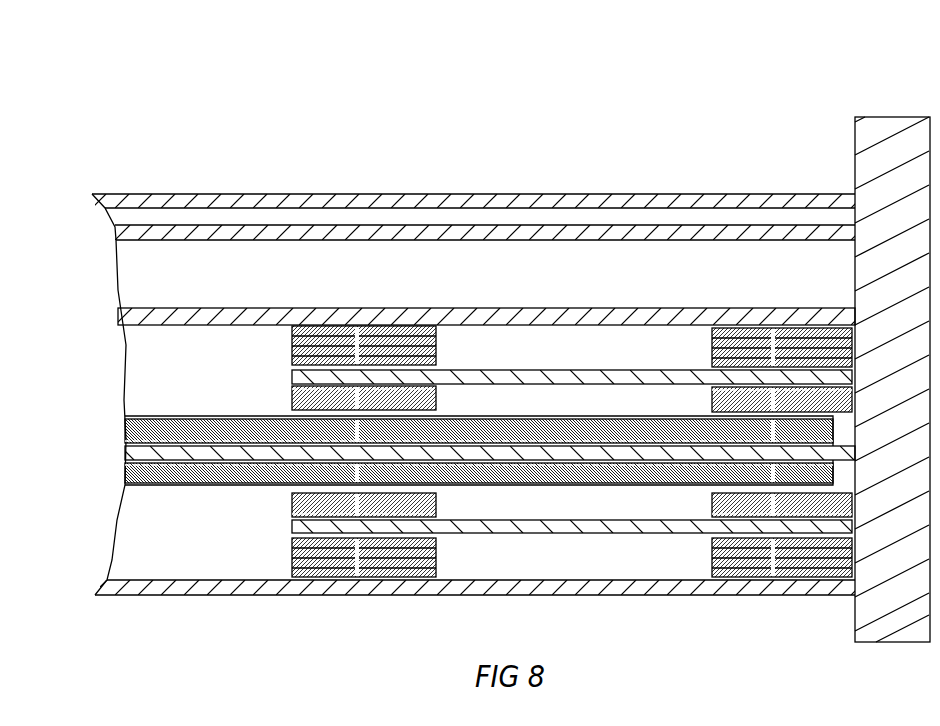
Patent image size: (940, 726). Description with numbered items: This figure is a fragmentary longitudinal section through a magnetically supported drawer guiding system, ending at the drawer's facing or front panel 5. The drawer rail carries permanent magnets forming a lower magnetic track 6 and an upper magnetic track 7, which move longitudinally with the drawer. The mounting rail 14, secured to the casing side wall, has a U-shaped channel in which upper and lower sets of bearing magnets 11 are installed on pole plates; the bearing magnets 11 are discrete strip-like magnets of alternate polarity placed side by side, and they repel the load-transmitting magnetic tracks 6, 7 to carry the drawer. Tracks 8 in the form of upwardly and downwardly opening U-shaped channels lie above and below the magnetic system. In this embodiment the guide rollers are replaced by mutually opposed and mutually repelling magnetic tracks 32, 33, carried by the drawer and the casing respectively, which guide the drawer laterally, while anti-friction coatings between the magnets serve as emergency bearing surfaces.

The front panel 5 is at (888, 140).
The lower magnetic track 6 is at (640, 475).
The upper magnetic track 7 is at (637, 425).
The track 8 is at (516, 338).
The bearing magnet 11 is at (712, 397).
The mounting rail 14 is at (585, 377).
The lateral guiding magnetic track 32 is at (405, 330).
The lateral guiding magnetic track 33 is at (364, 398).